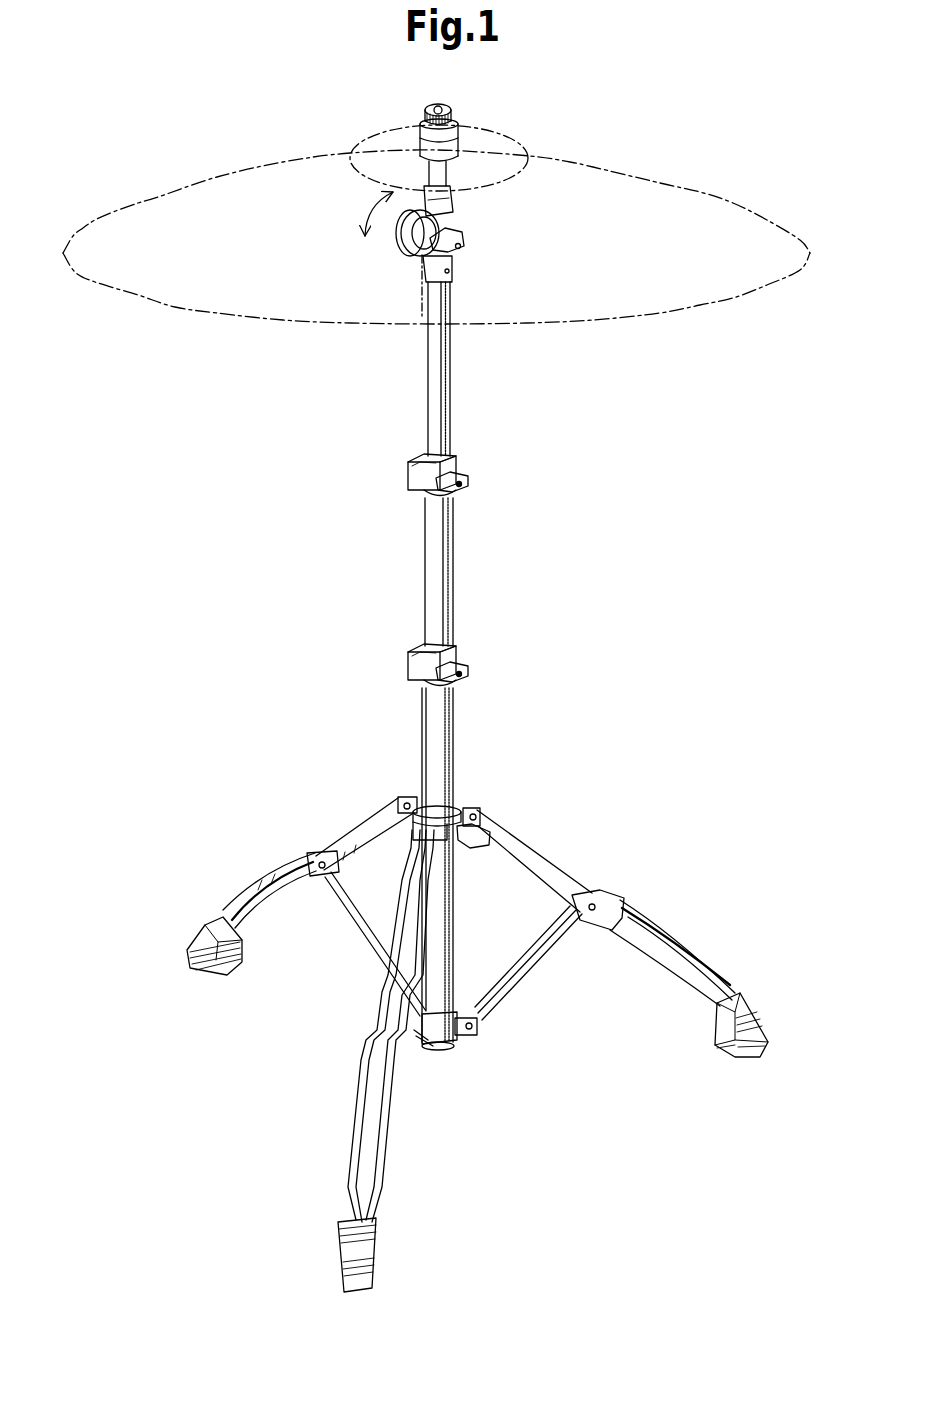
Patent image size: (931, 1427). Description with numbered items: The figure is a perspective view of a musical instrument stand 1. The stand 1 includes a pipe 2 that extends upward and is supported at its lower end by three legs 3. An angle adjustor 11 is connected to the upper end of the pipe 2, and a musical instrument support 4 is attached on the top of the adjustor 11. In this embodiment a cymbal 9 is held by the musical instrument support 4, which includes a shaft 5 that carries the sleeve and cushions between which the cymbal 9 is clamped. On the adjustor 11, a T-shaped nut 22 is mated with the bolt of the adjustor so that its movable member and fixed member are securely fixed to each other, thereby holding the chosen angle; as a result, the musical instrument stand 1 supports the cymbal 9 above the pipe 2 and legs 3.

The musical instrument stand 1 is at (648, 452).
The pipe 2 is at (438, 105).
The legs 3 is at (527, 860).
The musical instrument support 4 is at (470, 148).
The shaft 5 is at (430, 167).
The cymbal 9 is at (715, 303).
The angle adjustor 11 is at (471, 251).
The T-shaped nut 22 is at (464, 234).